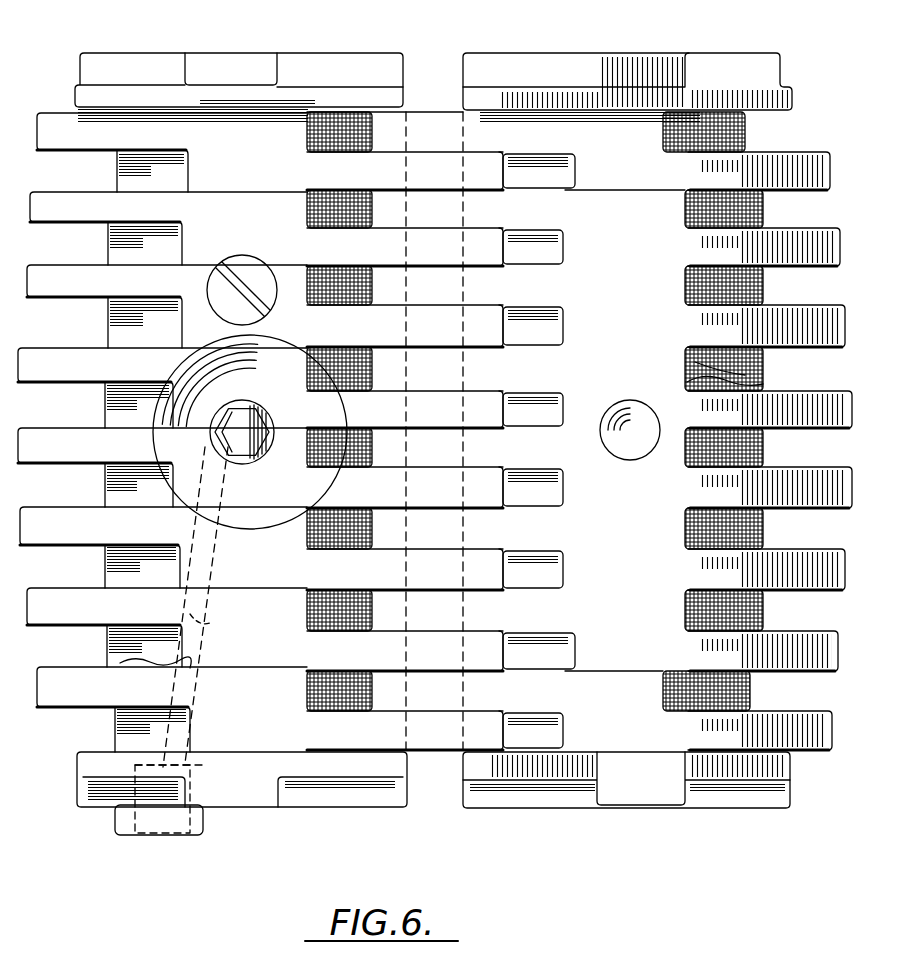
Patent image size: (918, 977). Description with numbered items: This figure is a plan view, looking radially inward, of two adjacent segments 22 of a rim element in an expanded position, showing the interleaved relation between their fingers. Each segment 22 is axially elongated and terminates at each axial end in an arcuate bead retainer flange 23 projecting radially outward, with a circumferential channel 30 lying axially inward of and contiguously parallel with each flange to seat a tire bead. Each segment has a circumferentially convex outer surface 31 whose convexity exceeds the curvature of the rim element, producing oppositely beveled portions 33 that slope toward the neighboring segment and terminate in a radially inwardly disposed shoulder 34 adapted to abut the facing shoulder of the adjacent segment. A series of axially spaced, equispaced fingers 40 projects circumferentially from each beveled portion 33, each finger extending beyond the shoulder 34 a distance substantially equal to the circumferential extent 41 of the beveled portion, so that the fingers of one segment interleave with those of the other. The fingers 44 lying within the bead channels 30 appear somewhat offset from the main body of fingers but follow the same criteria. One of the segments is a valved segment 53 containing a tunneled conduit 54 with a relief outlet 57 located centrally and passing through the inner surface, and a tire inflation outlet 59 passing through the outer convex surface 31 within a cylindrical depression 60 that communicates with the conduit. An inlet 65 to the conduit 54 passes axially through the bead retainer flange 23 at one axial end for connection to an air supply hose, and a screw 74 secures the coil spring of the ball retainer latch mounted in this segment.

The segment 22 is at (780, 56).
The arcuate bead retainer flange 23 is at (308, 95).
The circumferential channel 30 is at (237, 148).
The convex outer surface 31 is at (262, 602).
The beveled portion 33 is at (315, 285).
The shoulder 34 is at (463, 100).
The finger 40 is at (36, 445).
The circumferential extent of the beveled portion 41 is at (730, 378).
The finger in bead channel 44 is at (55, 122).
The valved segment 53 is at (80, 808).
The tunneled conduit 54 is at (205, 622).
The relief outlet 57 is at (258, 458).
The tire inflation outlet 59 is at (213, 451).
The cylindrical depression 60 is at (633, 460).
The inlet 65 is at (148, 834).
The screw 74 is at (218, 288).